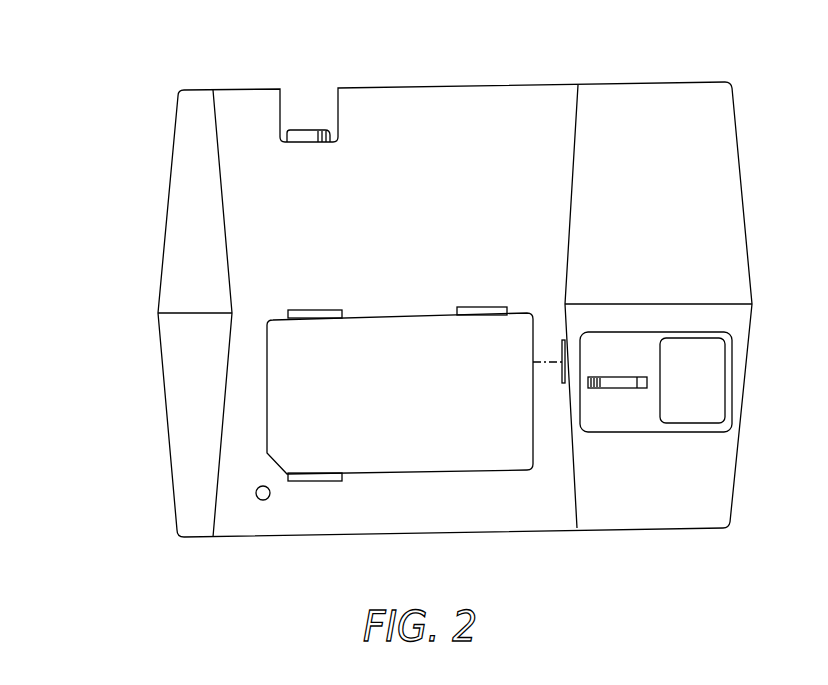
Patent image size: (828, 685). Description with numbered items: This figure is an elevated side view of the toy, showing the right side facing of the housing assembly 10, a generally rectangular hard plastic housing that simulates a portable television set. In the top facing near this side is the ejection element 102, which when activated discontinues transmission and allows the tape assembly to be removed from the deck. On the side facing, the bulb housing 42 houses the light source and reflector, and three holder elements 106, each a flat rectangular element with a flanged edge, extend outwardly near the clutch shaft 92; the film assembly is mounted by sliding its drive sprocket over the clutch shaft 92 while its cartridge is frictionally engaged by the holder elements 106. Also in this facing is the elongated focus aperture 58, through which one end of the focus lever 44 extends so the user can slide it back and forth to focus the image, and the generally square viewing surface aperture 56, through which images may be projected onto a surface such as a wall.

The housing assembly 10 is at (138, 207).
The bulb housing 42 is at (493, 453).
The focus lever 44 is at (600, 389).
The viewing surface aperture 56 is at (694, 345).
The focus aperture 58 is at (637, 389).
The clutch shaft 92 is at (263, 500).
The ejection element 102 is at (298, 131).
The holder elements 106 is at (320, 310).